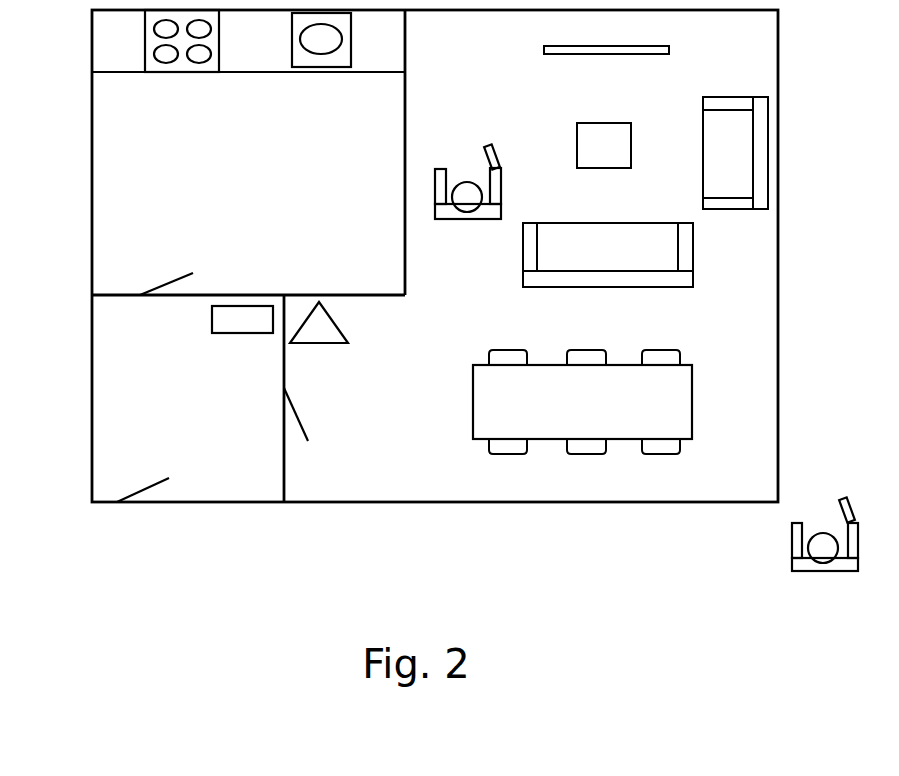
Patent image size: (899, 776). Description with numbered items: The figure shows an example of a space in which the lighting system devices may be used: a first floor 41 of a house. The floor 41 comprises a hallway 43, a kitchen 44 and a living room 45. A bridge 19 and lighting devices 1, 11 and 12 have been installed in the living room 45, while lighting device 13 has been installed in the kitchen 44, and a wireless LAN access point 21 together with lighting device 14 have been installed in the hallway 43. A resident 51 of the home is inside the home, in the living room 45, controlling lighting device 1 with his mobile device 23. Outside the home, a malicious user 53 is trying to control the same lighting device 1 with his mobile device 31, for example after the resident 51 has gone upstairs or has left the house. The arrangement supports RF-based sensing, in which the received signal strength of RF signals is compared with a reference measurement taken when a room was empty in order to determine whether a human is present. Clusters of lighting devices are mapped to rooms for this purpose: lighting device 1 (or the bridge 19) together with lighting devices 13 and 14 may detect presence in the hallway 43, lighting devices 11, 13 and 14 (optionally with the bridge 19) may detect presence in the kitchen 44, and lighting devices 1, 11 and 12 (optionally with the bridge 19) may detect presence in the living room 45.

The lighting device 1 is at (582, 402).
The lighting device 11 is at (546, 42).
The lighting device 12 is at (645, 155).
The lighting device 13 is at (248, 152).
The lighting device 14 is at (225, 398).
The bridge 19 is at (319, 322).
The wireless LAN access point 21 is at (242, 319).
The mobile device 23 is at (483, 153).
The mobile device 31 is at (840, 503).
The first floor 41 is at (91, 92).
The hallway 43 is at (144, 299).
The kitchen 44 is at (254, 381).
The living room 45 is at (302, 442).
The resident 51 is at (468, 187).
The malicious user 53 is at (825, 540).